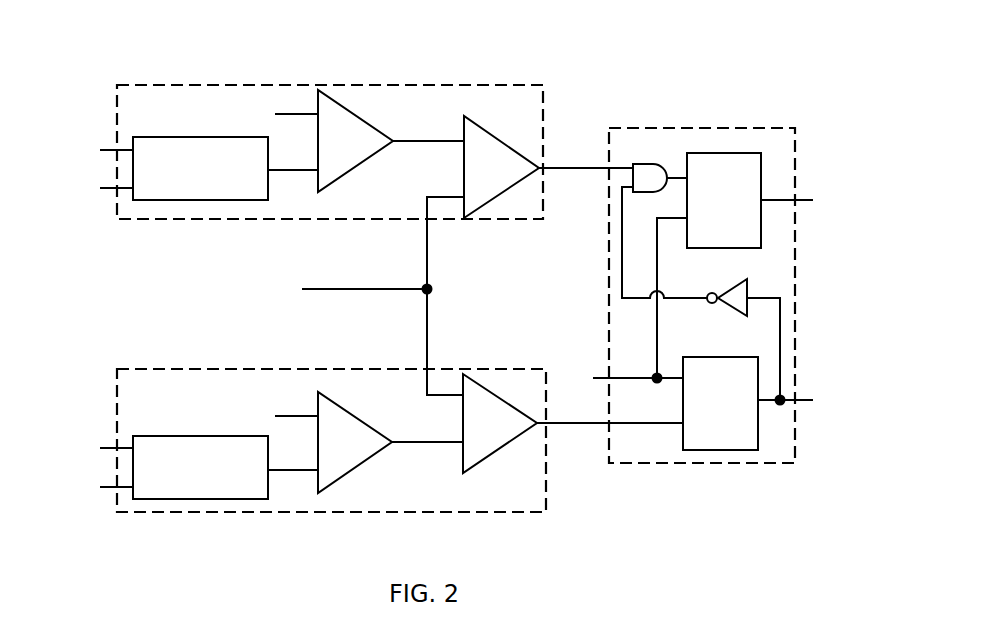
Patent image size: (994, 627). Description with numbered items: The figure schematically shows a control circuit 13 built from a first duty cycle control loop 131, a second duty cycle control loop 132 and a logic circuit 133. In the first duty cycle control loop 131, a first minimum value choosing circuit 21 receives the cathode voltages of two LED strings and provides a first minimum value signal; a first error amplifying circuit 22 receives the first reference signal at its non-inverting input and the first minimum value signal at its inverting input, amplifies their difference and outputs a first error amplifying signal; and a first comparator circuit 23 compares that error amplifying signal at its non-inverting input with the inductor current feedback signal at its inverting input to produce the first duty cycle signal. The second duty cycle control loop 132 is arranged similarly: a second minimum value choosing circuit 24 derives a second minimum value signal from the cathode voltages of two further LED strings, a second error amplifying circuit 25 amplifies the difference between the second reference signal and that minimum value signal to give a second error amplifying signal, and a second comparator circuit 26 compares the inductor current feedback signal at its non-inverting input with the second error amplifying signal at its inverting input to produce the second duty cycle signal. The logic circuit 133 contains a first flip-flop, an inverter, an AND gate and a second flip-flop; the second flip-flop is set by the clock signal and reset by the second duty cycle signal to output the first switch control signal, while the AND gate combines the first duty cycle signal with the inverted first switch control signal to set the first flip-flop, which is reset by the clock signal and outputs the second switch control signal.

The control circuit 13 is at (740, 68).
The first duty cycle control loop 131 is at (555, 87).
The second duty cycle control loop 132 is at (560, 485).
The logic circuit 133 is at (698, 118).
The first minimum value choosing circuit 21 is at (164, 137).
The first error amplifying circuit 22 is at (383, 112).
The first comparator circuit 23 is at (502, 138).
The second minimum value choosing circuit 24 is at (172, 435).
The second error amplifying circuit 25 is at (366, 408).
The second comparator circuit 26 is at (512, 408).